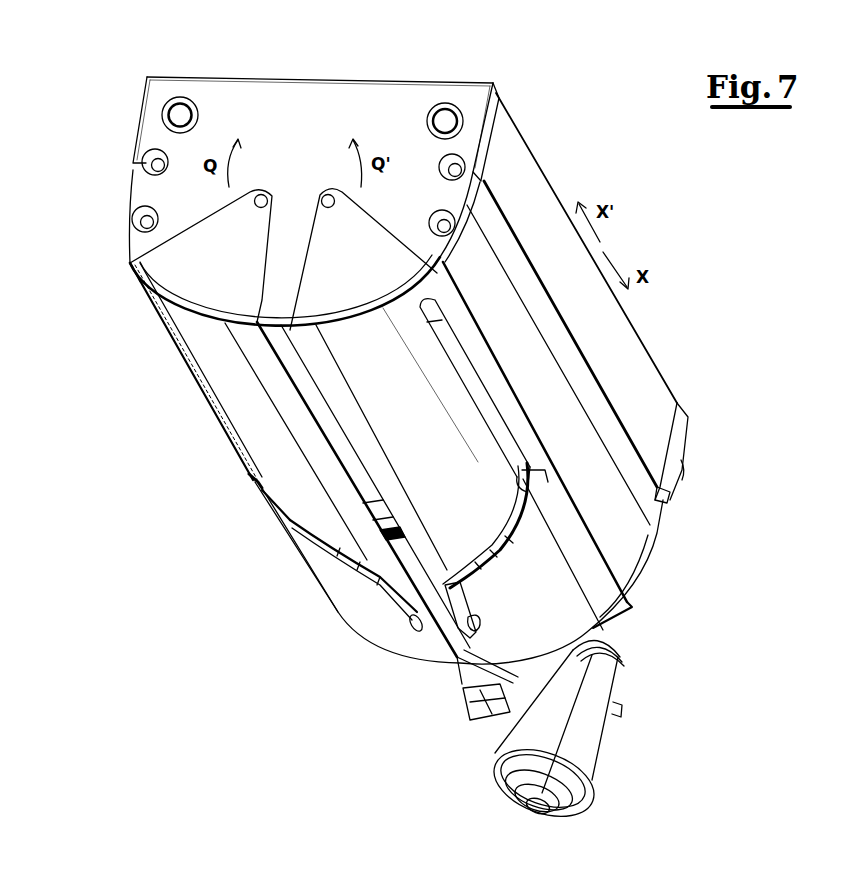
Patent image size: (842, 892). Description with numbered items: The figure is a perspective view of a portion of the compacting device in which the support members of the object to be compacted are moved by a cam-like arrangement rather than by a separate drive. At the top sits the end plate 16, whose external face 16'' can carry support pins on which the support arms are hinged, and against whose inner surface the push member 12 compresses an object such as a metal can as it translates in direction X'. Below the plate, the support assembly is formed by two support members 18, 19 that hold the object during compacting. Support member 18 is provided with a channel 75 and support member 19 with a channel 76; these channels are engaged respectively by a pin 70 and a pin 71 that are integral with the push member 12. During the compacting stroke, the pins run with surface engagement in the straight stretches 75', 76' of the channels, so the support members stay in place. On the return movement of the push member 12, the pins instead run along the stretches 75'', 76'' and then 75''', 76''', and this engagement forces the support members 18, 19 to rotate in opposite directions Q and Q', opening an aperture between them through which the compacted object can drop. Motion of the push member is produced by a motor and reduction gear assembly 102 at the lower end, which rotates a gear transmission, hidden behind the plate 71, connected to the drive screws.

The end plate 16 is at (350, 203).
The external face of the end plate 16'' is at (313, 98).
The channel 75 is at (196, 371).
The channel stretch 75' is at (136, 307).
The channel stretch 75'' is at (336, 591).
The channel stretch 75''' is at (405, 673).
The pin 70 is at (253, 481).
The support member 18 is at (363, 633).
The push member 12 is at (380, 508).
The channel 76 is at (428, 385).
The channel stretch 76' is at (475, 388).
The channel stretch 76'' is at (491, 533).
The channel stretch 76''' is at (493, 613).
The pin 71 is at (530, 491).
The support member 19 is at (612, 609).
The motor and reduction gear assembly 102 is at (594, 679).